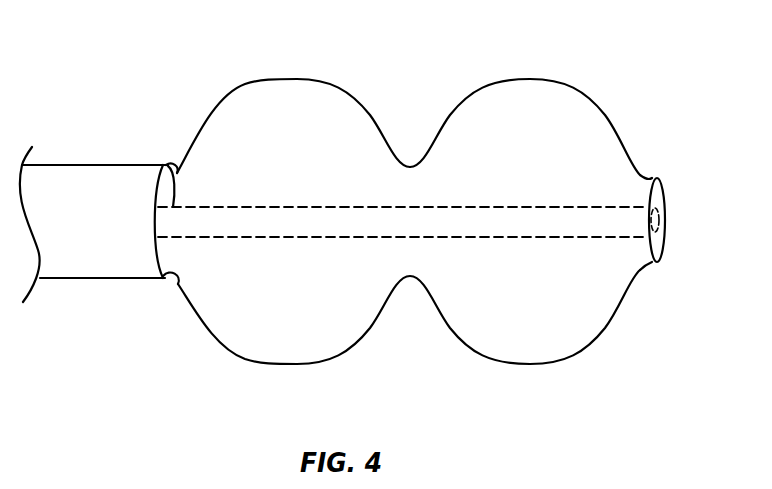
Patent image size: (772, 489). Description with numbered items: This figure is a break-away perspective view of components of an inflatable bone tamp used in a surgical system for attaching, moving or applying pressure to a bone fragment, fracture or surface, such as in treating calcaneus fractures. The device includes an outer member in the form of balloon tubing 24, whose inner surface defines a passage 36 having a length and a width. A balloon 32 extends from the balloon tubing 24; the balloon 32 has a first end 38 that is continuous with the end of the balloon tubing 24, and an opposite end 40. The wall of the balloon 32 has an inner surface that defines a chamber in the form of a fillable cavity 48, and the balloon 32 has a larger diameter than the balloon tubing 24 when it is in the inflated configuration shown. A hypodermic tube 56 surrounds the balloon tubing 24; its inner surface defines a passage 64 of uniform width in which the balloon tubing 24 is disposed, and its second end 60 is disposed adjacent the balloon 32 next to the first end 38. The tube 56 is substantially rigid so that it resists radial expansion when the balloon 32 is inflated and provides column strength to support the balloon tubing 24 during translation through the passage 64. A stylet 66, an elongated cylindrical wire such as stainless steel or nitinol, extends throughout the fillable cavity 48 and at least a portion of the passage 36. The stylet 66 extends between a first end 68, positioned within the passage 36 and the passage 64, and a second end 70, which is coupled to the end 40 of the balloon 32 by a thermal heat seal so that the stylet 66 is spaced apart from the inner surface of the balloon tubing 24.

The balloon tubing 24 is at (181, 148).
The balloon 32 is at (667, 155).
The passage 36 is at (190, 188).
The first end 38 is at (198, 145).
The end 40 is at (637, 273).
The fillable cavity 48 is at (588, 275).
The hypodermic tube 56 is at (95, 281).
The second end 60 is at (145, 165).
The passage 64 is at (176, 281).
The stylet 66 is at (402, 204).
The first end 68 is at (165, 167).
The end 70 is at (627, 207).